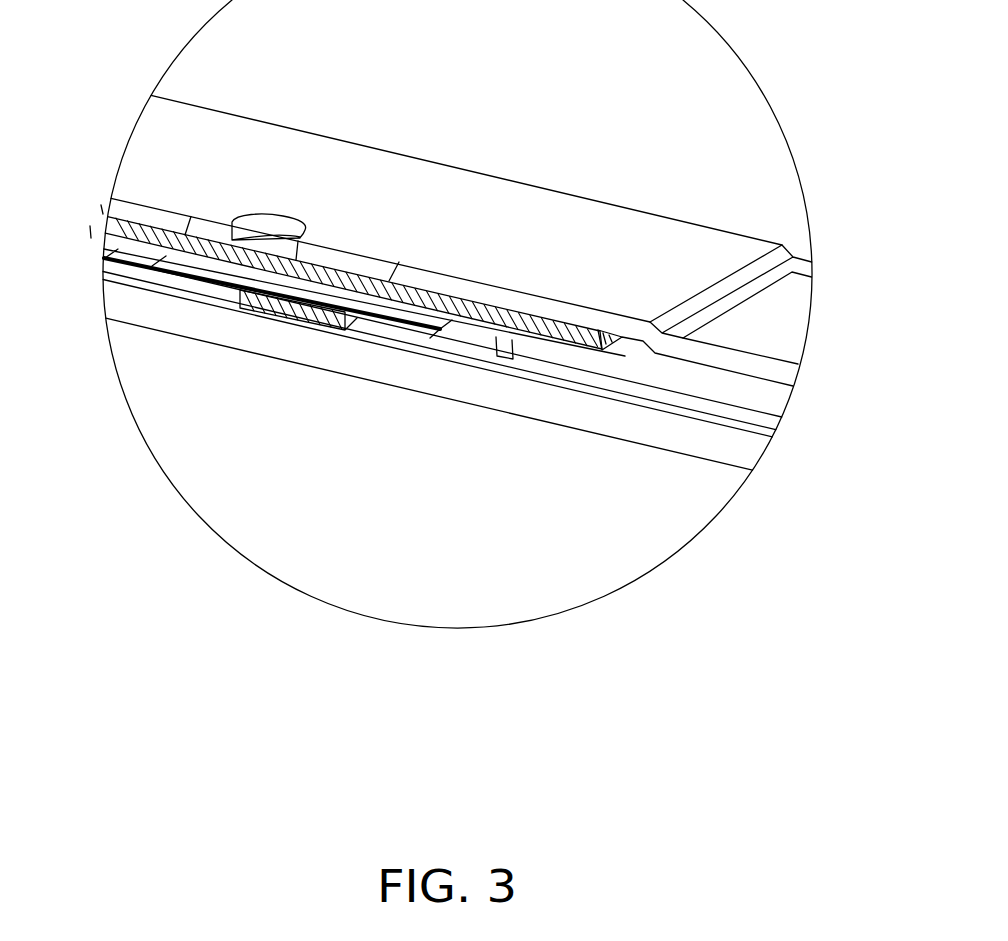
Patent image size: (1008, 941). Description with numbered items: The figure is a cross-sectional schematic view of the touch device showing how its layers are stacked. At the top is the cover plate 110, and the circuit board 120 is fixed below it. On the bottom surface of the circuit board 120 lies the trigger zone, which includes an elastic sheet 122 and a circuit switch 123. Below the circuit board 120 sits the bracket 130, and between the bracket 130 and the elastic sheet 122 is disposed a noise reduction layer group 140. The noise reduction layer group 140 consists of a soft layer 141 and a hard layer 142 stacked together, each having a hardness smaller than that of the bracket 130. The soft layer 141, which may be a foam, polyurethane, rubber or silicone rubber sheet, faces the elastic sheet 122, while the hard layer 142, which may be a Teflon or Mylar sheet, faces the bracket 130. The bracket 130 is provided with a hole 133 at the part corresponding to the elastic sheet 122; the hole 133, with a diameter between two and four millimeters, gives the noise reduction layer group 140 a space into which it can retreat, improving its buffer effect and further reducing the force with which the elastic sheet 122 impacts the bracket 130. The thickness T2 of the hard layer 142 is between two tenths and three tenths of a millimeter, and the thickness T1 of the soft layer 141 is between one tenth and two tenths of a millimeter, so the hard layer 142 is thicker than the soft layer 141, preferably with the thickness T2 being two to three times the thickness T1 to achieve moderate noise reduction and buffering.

The cover plate 110 is at (756, 455).
The circuit board 120 is at (778, 427).
The elastic sheet 122 is at (318, 310).
The circuit switch 123 is at (258, 310).
The bracket 130 is at (455, 200).
The hole 133 is at (281, 227).
The noise reduction layer group 140 is at (658, 143).
The soft layer 141 is at (620, 334).
The hard layer 142 is at (592, 328).
The thickness of the soft layer T1 is at (104, 232).
The thickness of the hard layer T2 is at (101, 211).